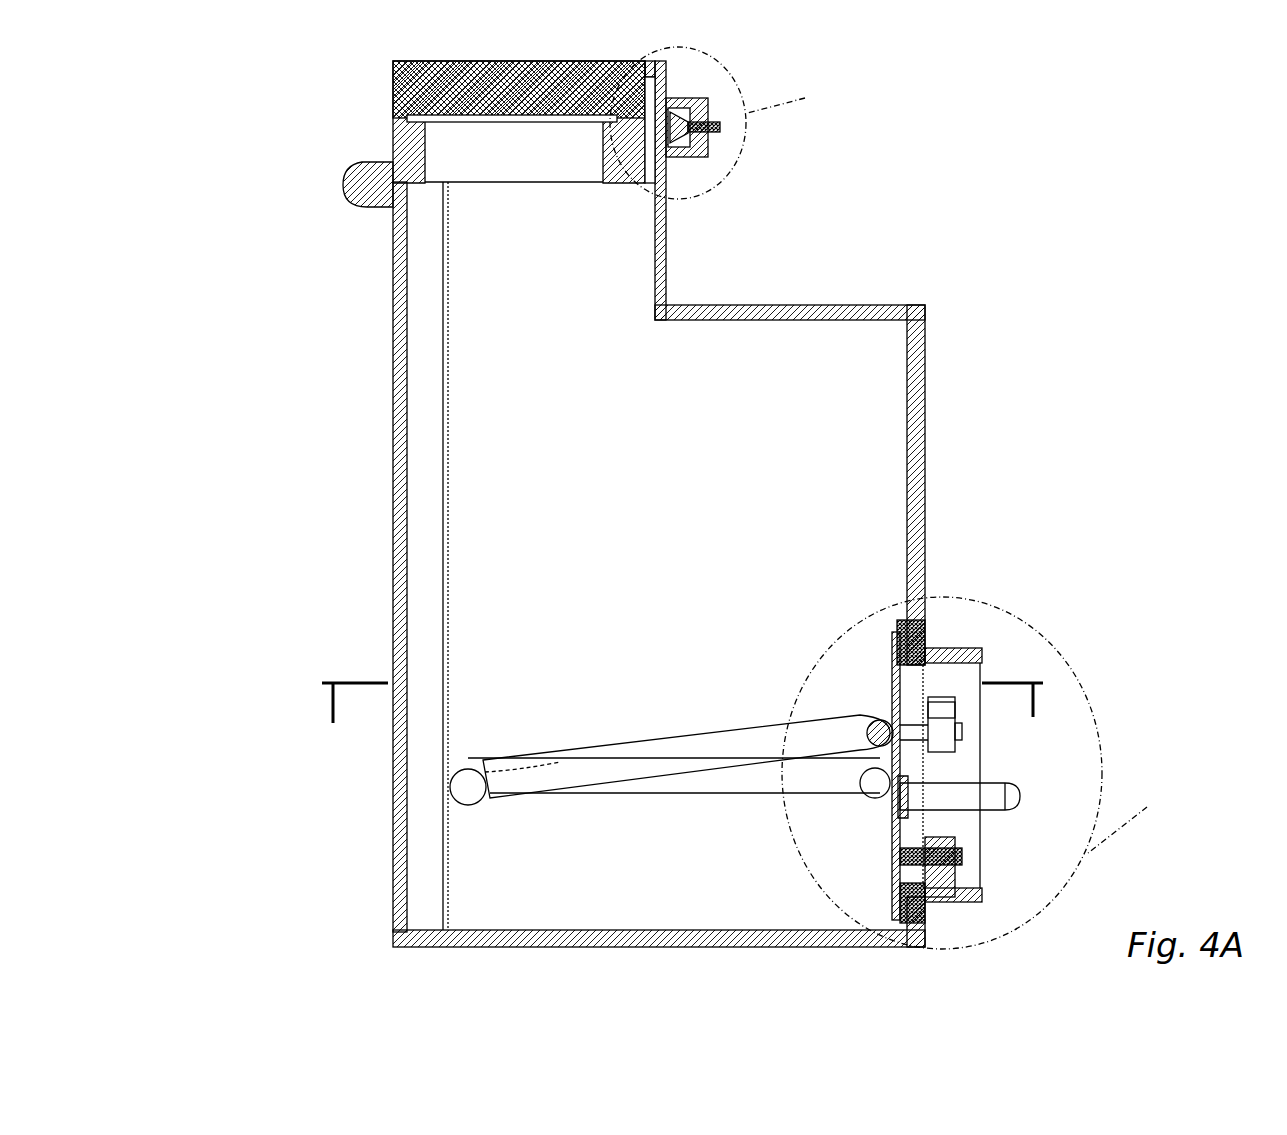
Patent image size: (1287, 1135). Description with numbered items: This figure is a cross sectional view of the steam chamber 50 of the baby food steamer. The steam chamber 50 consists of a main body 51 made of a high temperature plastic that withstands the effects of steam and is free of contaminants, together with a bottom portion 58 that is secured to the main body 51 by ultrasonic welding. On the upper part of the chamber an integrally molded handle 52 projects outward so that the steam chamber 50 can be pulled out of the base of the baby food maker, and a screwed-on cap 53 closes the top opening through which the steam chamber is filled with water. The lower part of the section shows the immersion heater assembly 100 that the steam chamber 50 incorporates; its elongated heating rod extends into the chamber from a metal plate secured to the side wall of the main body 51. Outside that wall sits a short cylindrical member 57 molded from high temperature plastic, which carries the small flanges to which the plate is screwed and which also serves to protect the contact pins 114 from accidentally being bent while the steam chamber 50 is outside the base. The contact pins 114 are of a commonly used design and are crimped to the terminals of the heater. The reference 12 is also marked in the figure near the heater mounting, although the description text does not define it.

The steam chamber 50 is at (1143, 476).
The main body 51 is at (927, 420).
The handle 52 is at (343, 195).
The cap 53 is at (392, 130).
The cylindrical member 57 is at (975, 660).
The bottom portion 58 is at (390, 937).
The immersion heater assembly 100 is at (463, 767).
The pivot bolt 12 is at (900, 705).
The contact pin 114 is at (1000, 788).